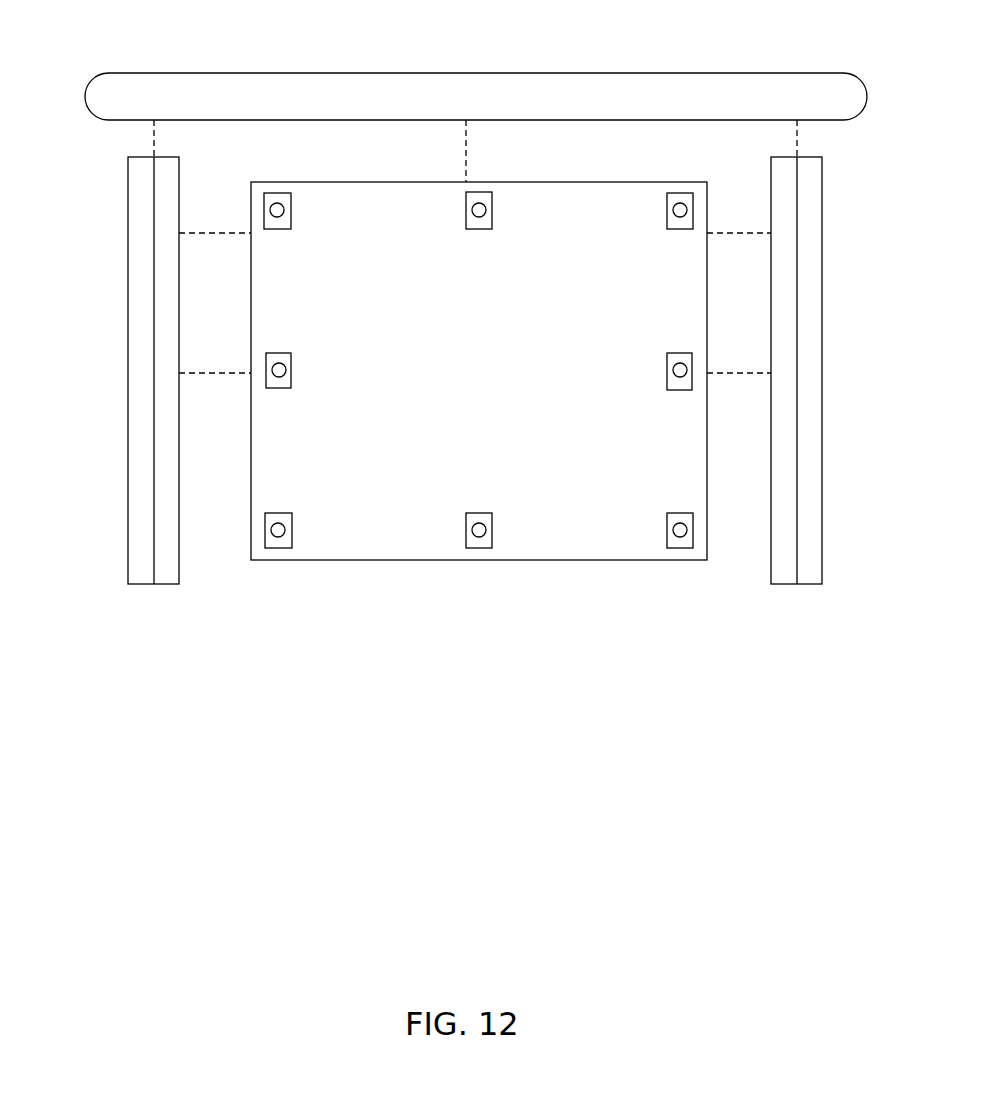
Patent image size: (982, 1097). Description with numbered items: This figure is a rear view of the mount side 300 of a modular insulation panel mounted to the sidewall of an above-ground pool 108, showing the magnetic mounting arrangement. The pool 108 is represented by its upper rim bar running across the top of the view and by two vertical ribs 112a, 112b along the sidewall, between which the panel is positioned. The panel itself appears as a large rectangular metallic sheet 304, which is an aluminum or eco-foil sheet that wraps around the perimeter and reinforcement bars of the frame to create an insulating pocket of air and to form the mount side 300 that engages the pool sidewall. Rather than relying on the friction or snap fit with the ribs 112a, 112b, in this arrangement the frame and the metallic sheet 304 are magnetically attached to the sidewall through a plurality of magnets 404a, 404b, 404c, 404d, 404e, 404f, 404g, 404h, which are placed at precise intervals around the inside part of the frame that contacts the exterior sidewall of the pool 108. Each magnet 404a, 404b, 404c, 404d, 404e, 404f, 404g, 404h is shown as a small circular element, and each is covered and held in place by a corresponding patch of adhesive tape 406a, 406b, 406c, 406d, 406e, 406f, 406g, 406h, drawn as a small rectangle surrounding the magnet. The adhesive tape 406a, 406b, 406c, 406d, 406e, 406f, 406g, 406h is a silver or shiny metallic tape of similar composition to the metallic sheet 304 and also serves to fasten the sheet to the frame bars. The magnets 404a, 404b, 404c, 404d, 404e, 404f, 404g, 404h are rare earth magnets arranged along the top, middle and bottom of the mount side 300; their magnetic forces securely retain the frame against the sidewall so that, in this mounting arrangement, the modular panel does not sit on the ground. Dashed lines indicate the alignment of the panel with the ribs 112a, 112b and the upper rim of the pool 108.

The above-ground pool 108 is at (98, 96).
The rib 112a is at (807, 351).
The rib 112b is at (143, 347).
The mount side 300 is at (470, 383).
The metallic sheet 304 is at (358, 540).
The magnet 404a is at (280, 524).
The magnet 404b is at (284, 212).
The magnet 404c is at (672, 212).
The magnet 404d is at (480, 216).
The magnet 404e is at (673, 370).
The magnet 404f is at (285, 370).
The mounting hole 404g is at (676, 524).
The mounting hole 404h is at (479, 537).
The mounting bracket 406a is at (280, 548).
The mounting bracket 406b is at (266, 194).
The mounting bracket 406c is at (673, 193).
The mounting bracket 406d is at (489, 192).
The mounting bracket 406e is at (688, 350).
The mounting bracket 406f is at (276, 353).
The mounting bracket 406g is at (683, 548).
The mounting bracket 406h is at (490, 548).